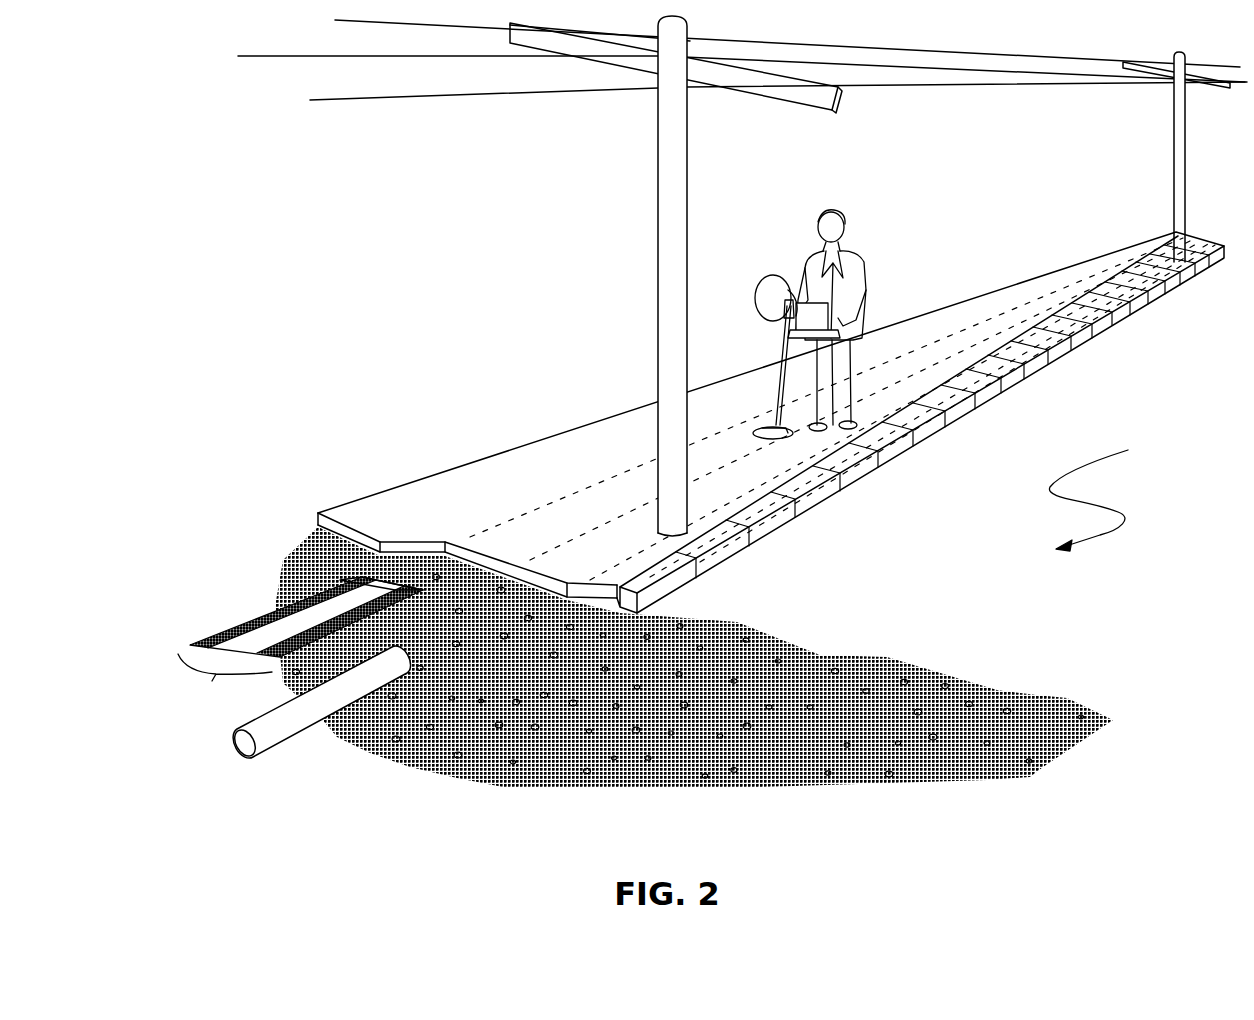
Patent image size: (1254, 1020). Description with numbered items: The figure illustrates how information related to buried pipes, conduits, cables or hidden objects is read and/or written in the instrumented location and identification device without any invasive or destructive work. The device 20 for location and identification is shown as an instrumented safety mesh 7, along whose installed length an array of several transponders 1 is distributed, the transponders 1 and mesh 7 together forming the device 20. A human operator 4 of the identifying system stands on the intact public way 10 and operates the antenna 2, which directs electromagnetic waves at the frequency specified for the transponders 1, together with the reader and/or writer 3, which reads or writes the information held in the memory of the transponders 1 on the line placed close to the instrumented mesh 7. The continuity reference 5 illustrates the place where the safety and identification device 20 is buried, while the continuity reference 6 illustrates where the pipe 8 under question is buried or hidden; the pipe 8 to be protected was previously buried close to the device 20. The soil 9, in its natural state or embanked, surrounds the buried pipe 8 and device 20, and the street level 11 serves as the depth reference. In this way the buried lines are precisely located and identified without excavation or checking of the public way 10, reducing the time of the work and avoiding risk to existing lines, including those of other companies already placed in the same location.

The transponders 1 is at (267, 566).
The antenna 2 is at (791, 436).
The reader and/or writer 3 is at (833, 327).
The human operator 4 is at (841, 215).
The continuity reference 5 is at (972, 330).
The continuity reference 6 is at (1072, 313).
The instrumented mesh 7 is at (353, 580).
The pipe 8 is at (233, 745).
The soil 9 is at (770, 716).
The intact public way 10 is at (592, 442).
The street level 11 is at (1104, 491).
The device for location and identification 20 is at (221, 679).